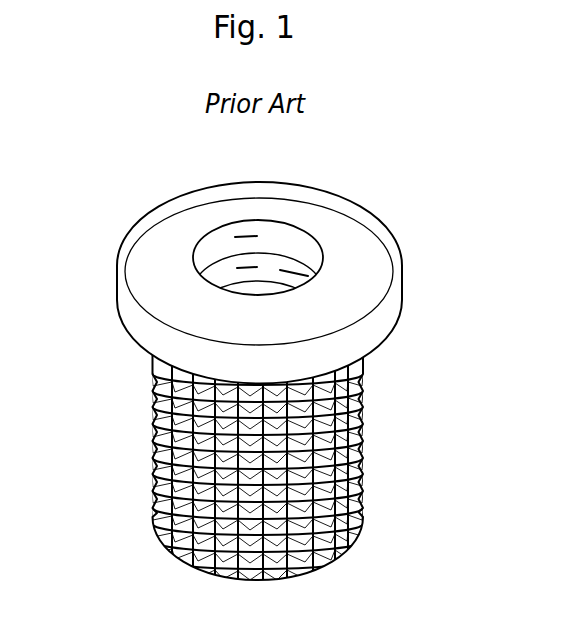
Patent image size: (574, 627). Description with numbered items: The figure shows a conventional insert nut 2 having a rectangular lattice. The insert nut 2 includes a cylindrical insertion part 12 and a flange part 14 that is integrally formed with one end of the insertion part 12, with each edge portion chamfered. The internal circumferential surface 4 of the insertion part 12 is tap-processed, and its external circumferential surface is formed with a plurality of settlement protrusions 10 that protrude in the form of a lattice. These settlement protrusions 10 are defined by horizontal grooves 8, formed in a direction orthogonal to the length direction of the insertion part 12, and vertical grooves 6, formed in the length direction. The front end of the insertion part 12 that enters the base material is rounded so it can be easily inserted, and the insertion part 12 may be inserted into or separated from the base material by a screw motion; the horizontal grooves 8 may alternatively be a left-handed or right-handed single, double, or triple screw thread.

The insert nut 2 is at (106, 241).
The internal circumferential surface 4 is at (292, 248).
The vertical grooves 6 is at (150, 448).
The horizontal grooves 8 is at (167, 541).
The settlement protrusions 10 is at (150, 505).
The insertion part 12 is at (421, 365).
The flange part 14 is at (421, 262).